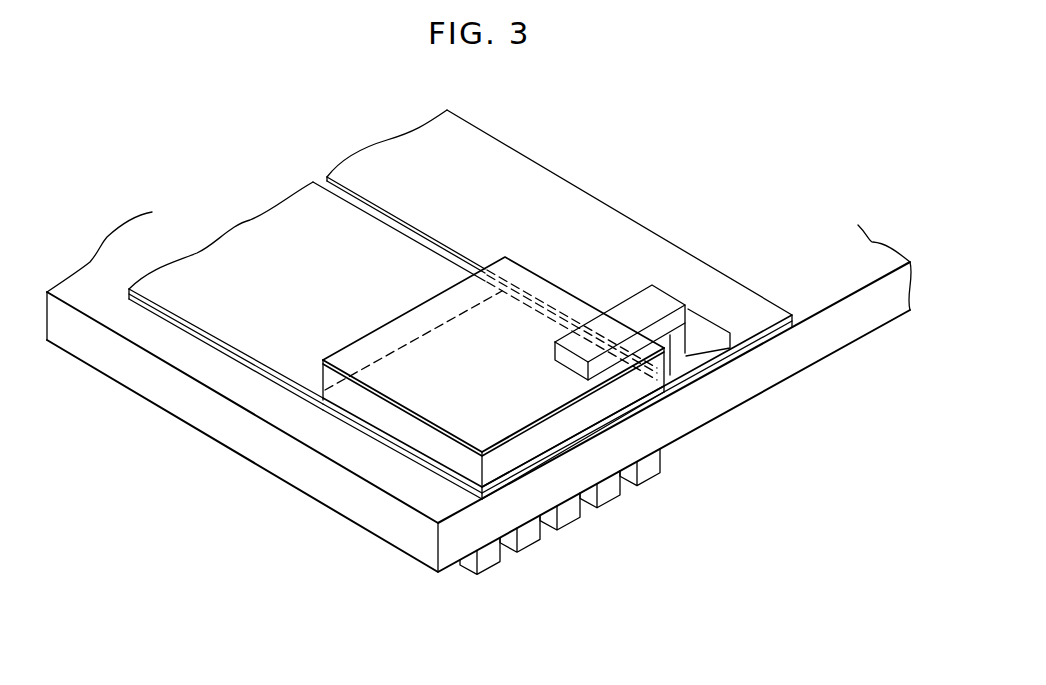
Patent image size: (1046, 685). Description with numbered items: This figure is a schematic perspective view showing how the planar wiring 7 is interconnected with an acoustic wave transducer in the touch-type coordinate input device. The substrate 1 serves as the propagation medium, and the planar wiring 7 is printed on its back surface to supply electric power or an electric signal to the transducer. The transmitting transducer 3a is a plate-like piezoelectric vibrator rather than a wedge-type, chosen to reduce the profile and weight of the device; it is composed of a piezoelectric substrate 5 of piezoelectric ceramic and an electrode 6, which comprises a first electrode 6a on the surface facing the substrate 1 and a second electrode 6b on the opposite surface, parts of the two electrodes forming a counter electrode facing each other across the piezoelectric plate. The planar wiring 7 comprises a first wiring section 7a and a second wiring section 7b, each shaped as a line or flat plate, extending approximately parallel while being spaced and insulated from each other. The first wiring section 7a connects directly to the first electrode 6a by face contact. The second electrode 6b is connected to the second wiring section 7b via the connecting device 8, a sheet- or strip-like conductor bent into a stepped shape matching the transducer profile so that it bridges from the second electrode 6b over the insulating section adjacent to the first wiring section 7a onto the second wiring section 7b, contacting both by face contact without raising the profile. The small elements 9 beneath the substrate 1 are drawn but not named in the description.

The substrate 1 is at (737, 392).
The transmitting transducer 3a is at (551, 283).
The piezoelectric substrate 5 is at (437, 447).
The electrode 6 is at (453, 457).
The first electrode 6a is at (400, 441).
The second electrode 6b is at (400, 391).
The planar wiring 7 is at (460, 307).
The first wiring section 7a is at (363, 227).
The second wiring section 7b is at (559, 323).
The connecting device 8 is at (660, 305).
The bumps 9 is at (566, 525).